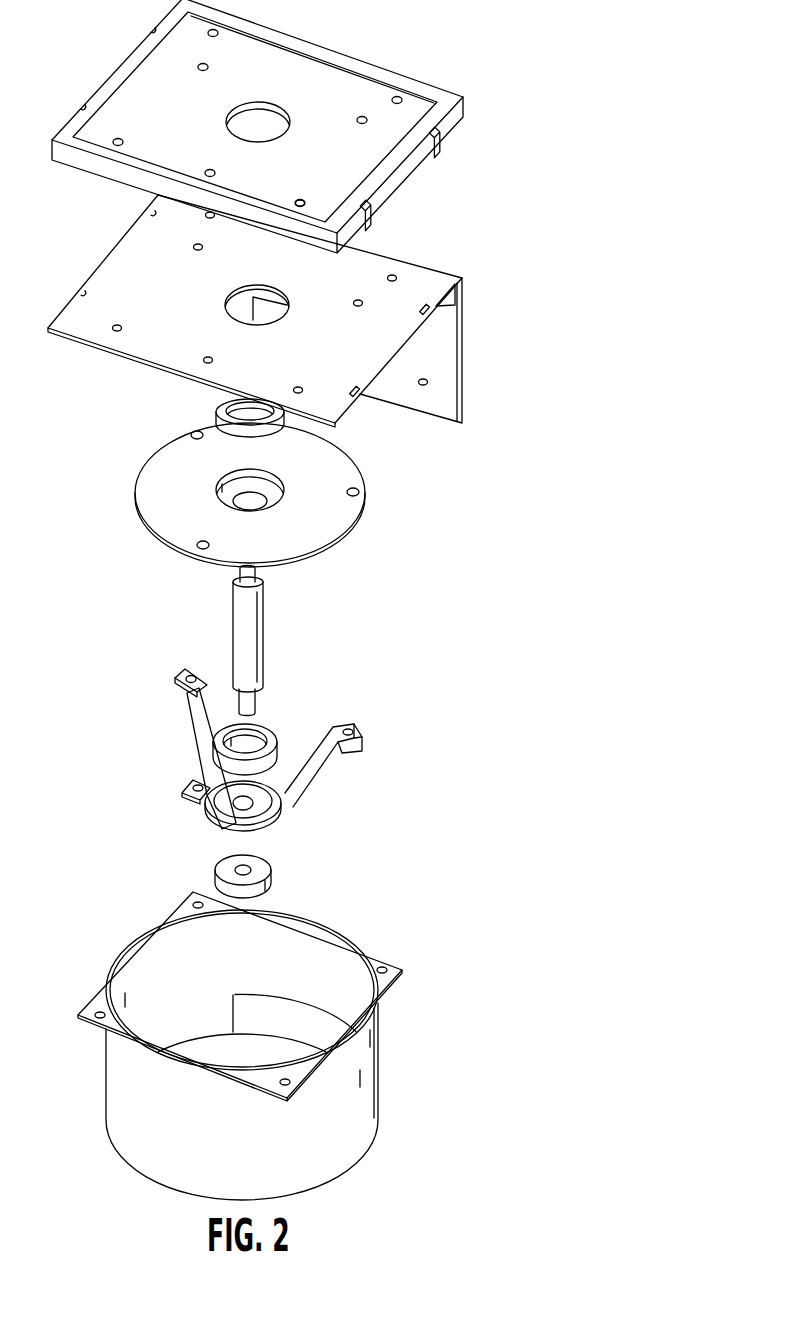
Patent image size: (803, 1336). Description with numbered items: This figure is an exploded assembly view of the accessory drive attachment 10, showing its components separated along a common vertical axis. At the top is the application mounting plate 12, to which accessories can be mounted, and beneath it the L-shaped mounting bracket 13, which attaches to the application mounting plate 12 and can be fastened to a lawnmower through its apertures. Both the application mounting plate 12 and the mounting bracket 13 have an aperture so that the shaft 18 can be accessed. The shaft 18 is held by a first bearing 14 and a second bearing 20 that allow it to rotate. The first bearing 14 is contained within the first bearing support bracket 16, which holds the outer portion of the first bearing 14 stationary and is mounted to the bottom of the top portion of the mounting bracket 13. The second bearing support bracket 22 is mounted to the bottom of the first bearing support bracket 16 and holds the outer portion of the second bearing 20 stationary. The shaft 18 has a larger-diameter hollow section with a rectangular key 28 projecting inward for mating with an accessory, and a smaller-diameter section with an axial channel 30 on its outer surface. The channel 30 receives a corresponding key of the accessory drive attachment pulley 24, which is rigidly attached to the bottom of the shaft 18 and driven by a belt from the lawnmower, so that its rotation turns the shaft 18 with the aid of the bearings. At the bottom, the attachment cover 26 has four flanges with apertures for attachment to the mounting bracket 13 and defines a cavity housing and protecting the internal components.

The accessory drive attachment 10 is at (594, 273).
The application mounting plate 12 is at (347, 80).
The mounting bracket 13 is at (443, 355).
The first bearing 14 is at (213, 409).
The first bearing support bracket 16 is at (332, 515).
The shaft 18 is at (252, 644).
The second bearing 20 is at (277, 737).
The second bearing support bracket 22 is at (300, 795).
The accessory drive attachment pulley 24 is at (272, 877).
The attachment cover 26 is at (363, 1102).
The key 28 is at (262, 572).
The channel 30 is at (237, 700).